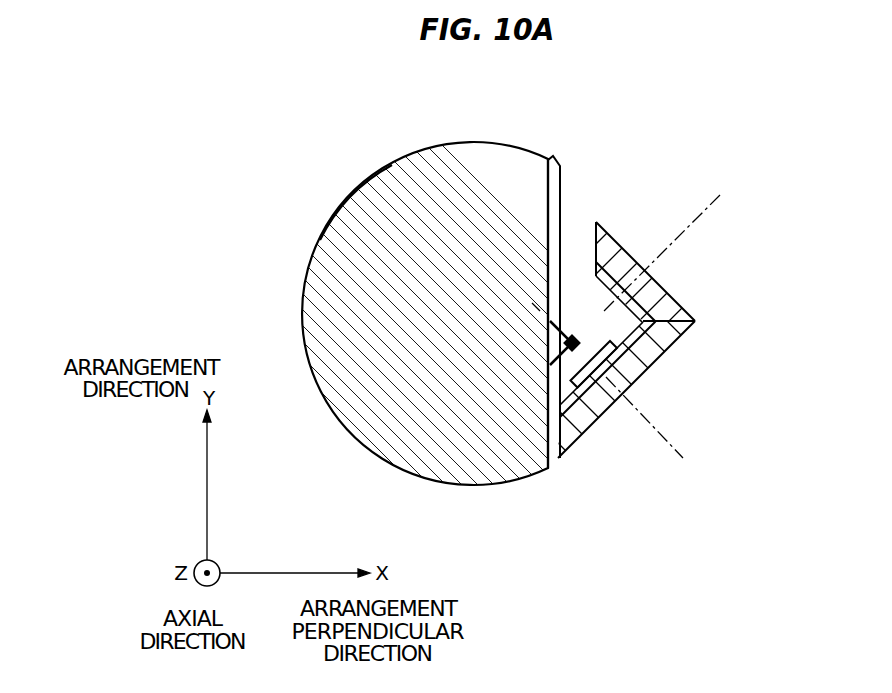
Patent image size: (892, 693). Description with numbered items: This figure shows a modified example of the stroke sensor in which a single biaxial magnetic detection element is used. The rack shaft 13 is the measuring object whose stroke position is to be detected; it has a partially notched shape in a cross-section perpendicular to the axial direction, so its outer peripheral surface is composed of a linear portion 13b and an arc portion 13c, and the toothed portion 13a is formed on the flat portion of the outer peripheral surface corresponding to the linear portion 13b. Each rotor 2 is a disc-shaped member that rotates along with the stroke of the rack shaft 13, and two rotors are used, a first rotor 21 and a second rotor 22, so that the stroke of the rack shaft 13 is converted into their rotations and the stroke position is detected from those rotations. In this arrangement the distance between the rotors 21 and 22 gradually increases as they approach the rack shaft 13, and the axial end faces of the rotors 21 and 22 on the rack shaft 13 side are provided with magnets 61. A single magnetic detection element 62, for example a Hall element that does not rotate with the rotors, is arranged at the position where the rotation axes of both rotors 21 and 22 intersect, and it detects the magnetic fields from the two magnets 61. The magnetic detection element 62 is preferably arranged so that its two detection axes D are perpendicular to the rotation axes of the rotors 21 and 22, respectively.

The rack shaft 13 is at (366, 166).
The toothed portion 13a is at (553, 377).
The linear portion 13b is at (551, 160).
The arc portion 13c is at (331, 217).
The rotor 2 is at (649, 310).
The first rotor 21 is at (642, 365).
The second rotor 22 is at (600, 222).
The magnet 61 is at (612, 297).
The magnetic detection element 62 is at (580, 344).
The detection axis D is at (588, 358).